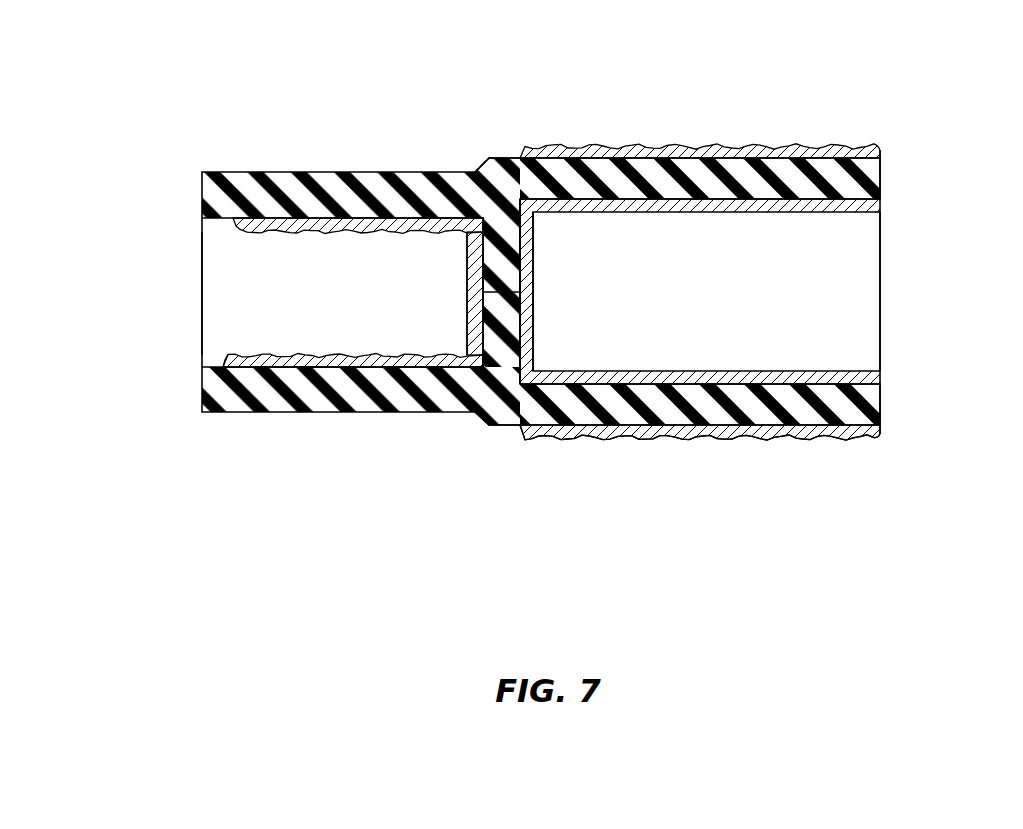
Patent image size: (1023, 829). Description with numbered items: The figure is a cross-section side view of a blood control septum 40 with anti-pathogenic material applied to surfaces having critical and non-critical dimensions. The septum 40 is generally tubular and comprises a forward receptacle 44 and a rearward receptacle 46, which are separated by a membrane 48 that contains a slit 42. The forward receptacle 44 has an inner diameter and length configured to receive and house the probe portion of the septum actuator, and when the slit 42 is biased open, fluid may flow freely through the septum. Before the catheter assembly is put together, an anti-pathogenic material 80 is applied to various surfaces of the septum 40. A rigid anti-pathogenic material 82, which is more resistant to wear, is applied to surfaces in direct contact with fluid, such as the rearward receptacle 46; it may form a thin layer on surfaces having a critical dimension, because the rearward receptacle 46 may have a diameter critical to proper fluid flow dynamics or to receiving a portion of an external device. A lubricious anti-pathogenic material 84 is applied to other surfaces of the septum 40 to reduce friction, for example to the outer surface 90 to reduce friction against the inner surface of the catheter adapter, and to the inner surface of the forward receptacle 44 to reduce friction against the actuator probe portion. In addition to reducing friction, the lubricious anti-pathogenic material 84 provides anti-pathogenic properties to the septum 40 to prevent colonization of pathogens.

The blood control septum 40 is at (353, 413).
The slit 42 is at (507, 292).
The forward receptacle 44 is at (247, 257).
The rearward receptacle 46 is at (858, 230).
The membrane 48 is at (522, 250).
The anti-pathogenic material 80 is at (876, 149).
The rigid anti-pathogenic material 82 is at (678, 213).
The lubricious anti-pathogenic material 84 is at (363, 357).
The outer surface 90 is at (507, 157).